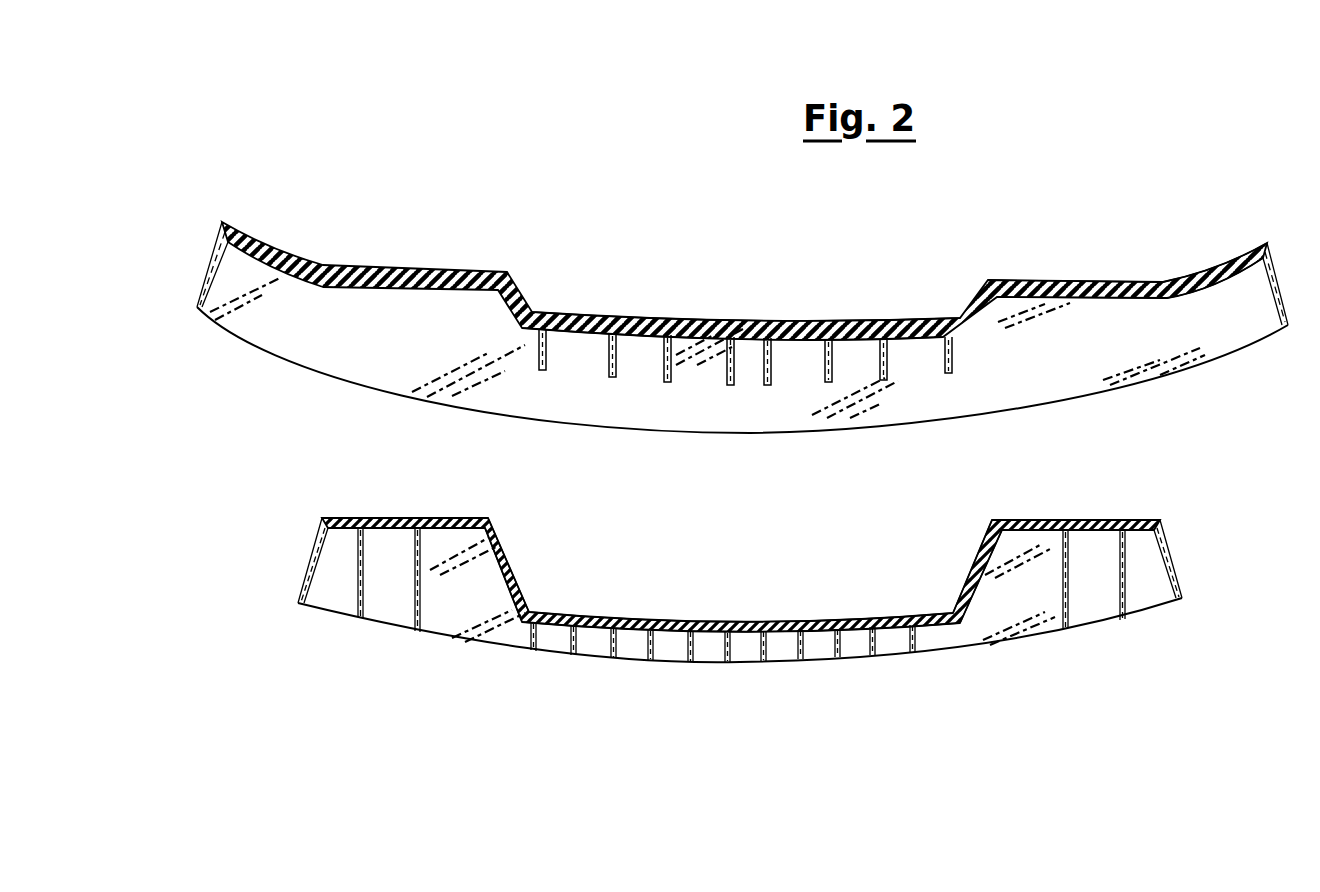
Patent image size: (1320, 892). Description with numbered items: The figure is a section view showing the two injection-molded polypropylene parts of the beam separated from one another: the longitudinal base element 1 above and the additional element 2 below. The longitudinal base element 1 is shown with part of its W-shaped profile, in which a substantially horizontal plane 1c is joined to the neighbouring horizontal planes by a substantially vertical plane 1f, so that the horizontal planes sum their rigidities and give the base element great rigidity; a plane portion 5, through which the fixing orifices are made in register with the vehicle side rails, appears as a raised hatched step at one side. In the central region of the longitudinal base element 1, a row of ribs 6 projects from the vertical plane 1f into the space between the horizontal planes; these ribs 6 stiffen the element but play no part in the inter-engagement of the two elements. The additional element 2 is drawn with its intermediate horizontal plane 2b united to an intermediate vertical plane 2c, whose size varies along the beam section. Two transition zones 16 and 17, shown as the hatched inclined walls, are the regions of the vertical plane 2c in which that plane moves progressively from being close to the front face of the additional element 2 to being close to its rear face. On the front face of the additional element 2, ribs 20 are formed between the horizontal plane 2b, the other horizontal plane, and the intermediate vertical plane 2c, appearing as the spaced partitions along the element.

The longitudinal base element 1 is at (1197, 222).
The horizontal plane 1c is at (1058, 380).
The vertical plane 1f is at (801, 318).
The plane portion 5 is at (1070, 281).
The ribs 6 is at (776, 382).
The additional element 2 is at (1198, 555).
The intermediate horizontal plane 2b is at (817, 645).
The intermediate vertical plane 2c is at (453, 523).
The transition zone 16 is at (513, 571).
The transition zone 17 is at (973, 573).
The ribs 20 is at (419, 612).